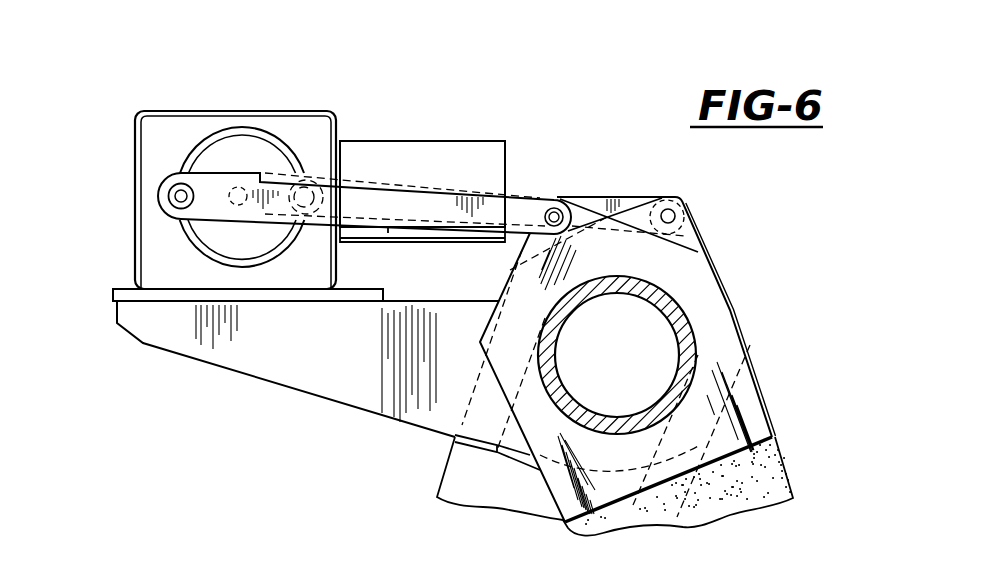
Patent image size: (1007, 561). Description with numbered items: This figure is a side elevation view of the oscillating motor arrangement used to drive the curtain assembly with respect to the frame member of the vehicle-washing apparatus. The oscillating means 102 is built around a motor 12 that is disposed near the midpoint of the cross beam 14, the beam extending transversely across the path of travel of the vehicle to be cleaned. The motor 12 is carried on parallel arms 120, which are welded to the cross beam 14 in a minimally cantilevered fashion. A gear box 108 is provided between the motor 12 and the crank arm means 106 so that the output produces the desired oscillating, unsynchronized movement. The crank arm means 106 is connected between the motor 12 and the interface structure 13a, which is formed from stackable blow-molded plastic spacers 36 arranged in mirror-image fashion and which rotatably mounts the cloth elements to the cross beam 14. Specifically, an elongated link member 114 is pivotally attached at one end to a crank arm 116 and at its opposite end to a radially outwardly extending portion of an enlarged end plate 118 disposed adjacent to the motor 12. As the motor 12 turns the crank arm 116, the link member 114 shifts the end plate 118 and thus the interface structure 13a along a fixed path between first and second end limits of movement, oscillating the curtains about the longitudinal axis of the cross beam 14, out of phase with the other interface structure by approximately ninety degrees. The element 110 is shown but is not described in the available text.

The oscillating means 102 is at (422, 118).
The motor 12 is at (445, 137).
The gear box 108 is at (228, 108).
The crank arm means 106 is at (146, 154).
The crank arm 116 is at (192, 225).
The elongated link member 114 is at (520, 190).
The enlarged end plate 118 is at (607, 199).
The cross beam 14 is at (662, 300).
The parallel arms 120 is at (250, 375).
The interface structure 13a is at (437, 458).
The spacer 36 is at (778, 453).
The support block 110 is at (796, 472).